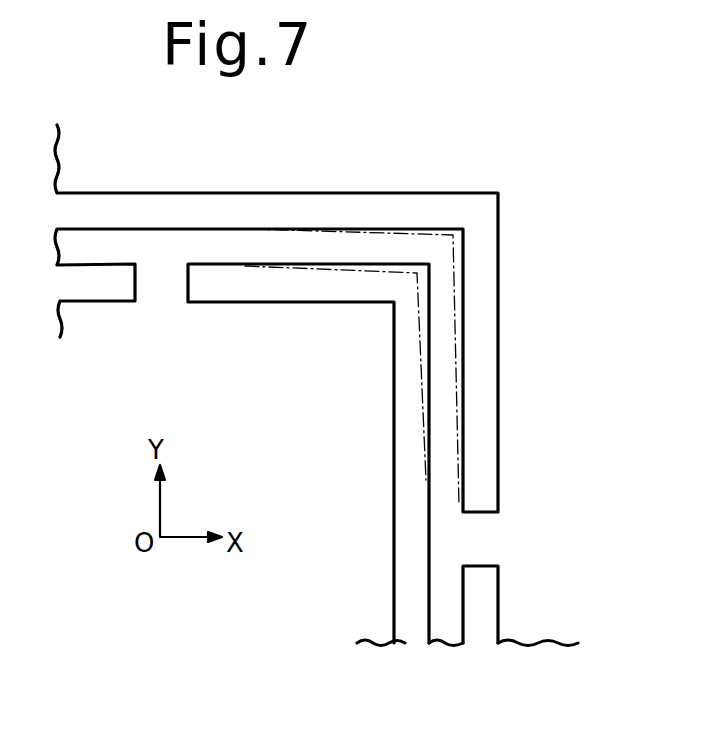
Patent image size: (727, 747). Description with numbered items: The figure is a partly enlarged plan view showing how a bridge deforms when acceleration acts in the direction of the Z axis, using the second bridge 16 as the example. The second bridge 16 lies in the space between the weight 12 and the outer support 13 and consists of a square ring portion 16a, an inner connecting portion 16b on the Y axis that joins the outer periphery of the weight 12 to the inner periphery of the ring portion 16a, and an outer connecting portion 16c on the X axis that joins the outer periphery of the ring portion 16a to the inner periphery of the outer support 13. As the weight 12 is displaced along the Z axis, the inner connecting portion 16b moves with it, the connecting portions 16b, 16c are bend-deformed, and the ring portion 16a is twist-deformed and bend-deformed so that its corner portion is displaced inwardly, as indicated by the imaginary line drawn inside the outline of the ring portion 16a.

The weight 12 is at (372, 645).
The outer support 13 is at (302, 297).
The second bridge 16 is at (466, 443).
The ring portion 16a is at (455, 272).
The inner connecting portion 16b is at (165, 283).
The outer connecting portion 16c is at (480, 538).